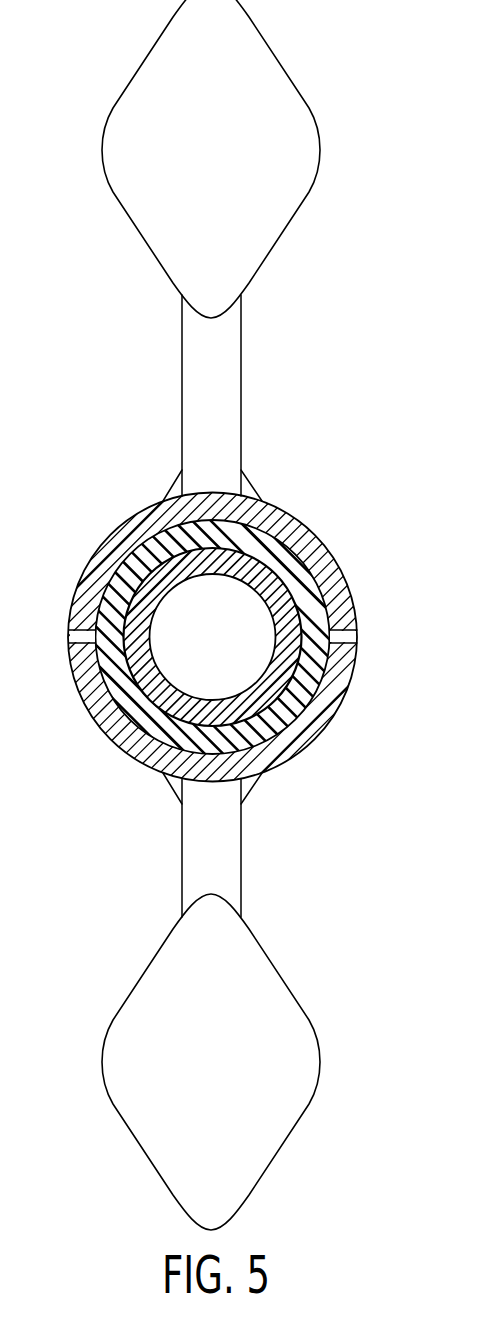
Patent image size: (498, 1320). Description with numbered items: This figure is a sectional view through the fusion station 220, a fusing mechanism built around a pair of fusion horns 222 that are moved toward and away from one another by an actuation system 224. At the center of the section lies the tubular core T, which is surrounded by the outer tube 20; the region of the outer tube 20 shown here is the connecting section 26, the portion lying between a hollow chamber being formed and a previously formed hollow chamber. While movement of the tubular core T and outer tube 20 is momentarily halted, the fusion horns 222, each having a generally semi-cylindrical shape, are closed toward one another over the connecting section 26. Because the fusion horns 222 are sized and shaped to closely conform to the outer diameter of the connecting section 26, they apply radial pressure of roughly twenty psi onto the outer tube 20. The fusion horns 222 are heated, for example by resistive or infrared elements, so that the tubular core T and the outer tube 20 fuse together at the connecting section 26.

The fusion station 220 is at (234, 615).
The fusion horns 222 is at (342, 570).
The actuation system 224 is at (275, 58).
The outer tube 20 is at (307, 549).
The connecting section 26 is at (286, 530).
The tubular core T is at (248, 588).